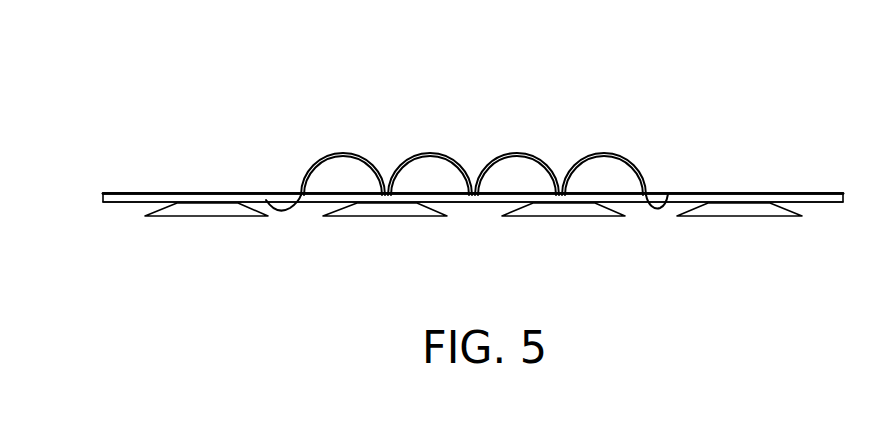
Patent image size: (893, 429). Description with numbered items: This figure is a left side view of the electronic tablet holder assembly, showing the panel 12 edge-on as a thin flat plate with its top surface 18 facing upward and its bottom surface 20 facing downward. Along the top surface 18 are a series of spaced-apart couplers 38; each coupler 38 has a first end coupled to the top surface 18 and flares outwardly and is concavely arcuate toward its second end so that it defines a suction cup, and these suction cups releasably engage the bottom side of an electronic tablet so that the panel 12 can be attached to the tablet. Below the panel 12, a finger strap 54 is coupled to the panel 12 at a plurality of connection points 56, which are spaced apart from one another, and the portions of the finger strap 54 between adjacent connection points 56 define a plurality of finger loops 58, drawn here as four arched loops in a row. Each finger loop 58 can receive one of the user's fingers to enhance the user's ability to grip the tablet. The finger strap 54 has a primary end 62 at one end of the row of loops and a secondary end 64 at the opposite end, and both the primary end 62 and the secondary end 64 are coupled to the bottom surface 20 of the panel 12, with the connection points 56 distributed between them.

The panel 12 is at (820, 193).
The top surface 18 is at (635, 205).
The bottom surface 20 is at (735, 193).
The couplers 38 is at (242, 216).
The finger strap 54 is at (318, 158).
The connection points 56 is at (387, 203).
The finger loops 58 is at (427, 142).
The primary end 62 is at (266, 200).
The secondary end 64 is at (671, 193).